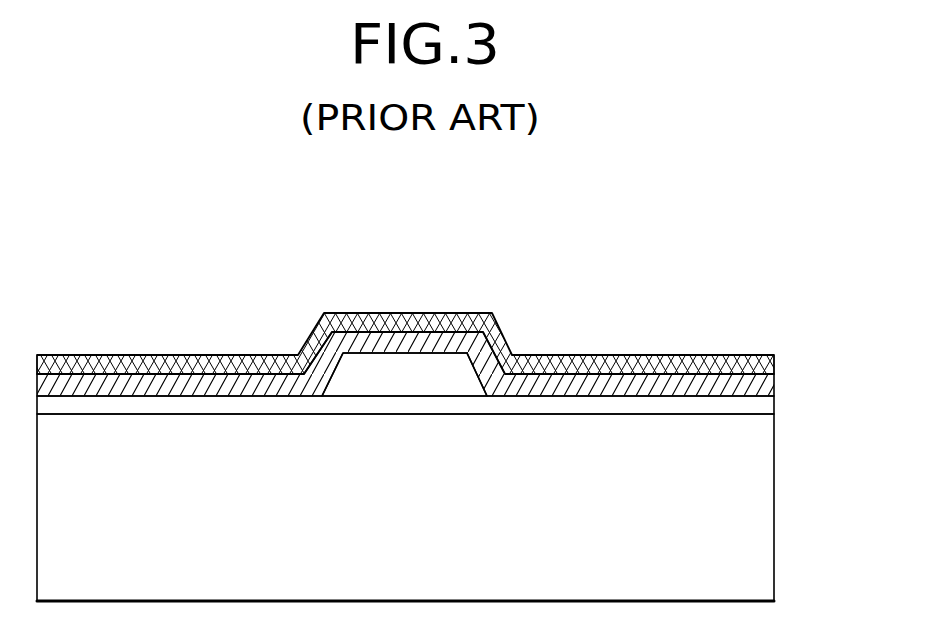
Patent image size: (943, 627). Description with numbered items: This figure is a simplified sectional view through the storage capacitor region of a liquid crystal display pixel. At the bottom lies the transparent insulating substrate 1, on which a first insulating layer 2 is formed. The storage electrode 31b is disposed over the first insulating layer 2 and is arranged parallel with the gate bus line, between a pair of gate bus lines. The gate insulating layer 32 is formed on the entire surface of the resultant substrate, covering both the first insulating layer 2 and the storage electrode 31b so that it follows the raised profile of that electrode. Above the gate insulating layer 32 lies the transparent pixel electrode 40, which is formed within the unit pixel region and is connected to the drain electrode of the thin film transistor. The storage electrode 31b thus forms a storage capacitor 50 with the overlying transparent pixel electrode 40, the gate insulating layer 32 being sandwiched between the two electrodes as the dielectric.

The storage capacitor 50 is at (170, 250).
The transparent insulating substrate 1 is at (762, 547).
The first insulating layer 2 is at (763, 407).
The storage electrode 31b is at (463, 373).
The gate insulating layer 32 is at (763, 383).
The transparent pixel electrode 40 is at (755, 358).